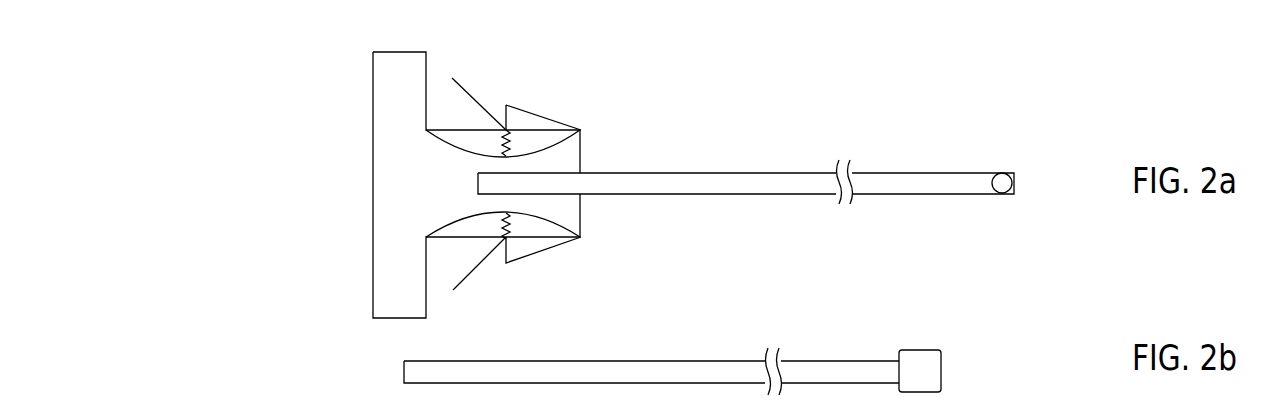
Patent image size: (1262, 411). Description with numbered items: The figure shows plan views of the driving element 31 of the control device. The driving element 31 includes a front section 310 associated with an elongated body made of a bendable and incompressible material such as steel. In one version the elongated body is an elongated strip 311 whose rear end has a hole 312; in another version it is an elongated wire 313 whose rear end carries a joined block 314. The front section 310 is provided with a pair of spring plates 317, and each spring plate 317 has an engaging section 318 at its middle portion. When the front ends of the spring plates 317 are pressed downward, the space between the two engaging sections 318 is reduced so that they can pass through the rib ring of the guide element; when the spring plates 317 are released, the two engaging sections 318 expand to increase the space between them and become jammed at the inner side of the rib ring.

In FIG. 2a, the driving element 31 is at (682, 142).
In FIG. 2a, the front section 310 is at (387, 177).
In FIG. 2a, the elongated strip 311 is at (908, 180).
In FIG. 2a, the hole 312 is at (1000, 178).
In FIG. 2b, the elongated wire 313 is at (802, 368).
In FIG. 2b, the joined block 314 is at (912, 368).
In FIG. 2a, the spring plate 317 is at (477, 98).
In FIG. 2a, the engaging section 318 is at (507, 105).